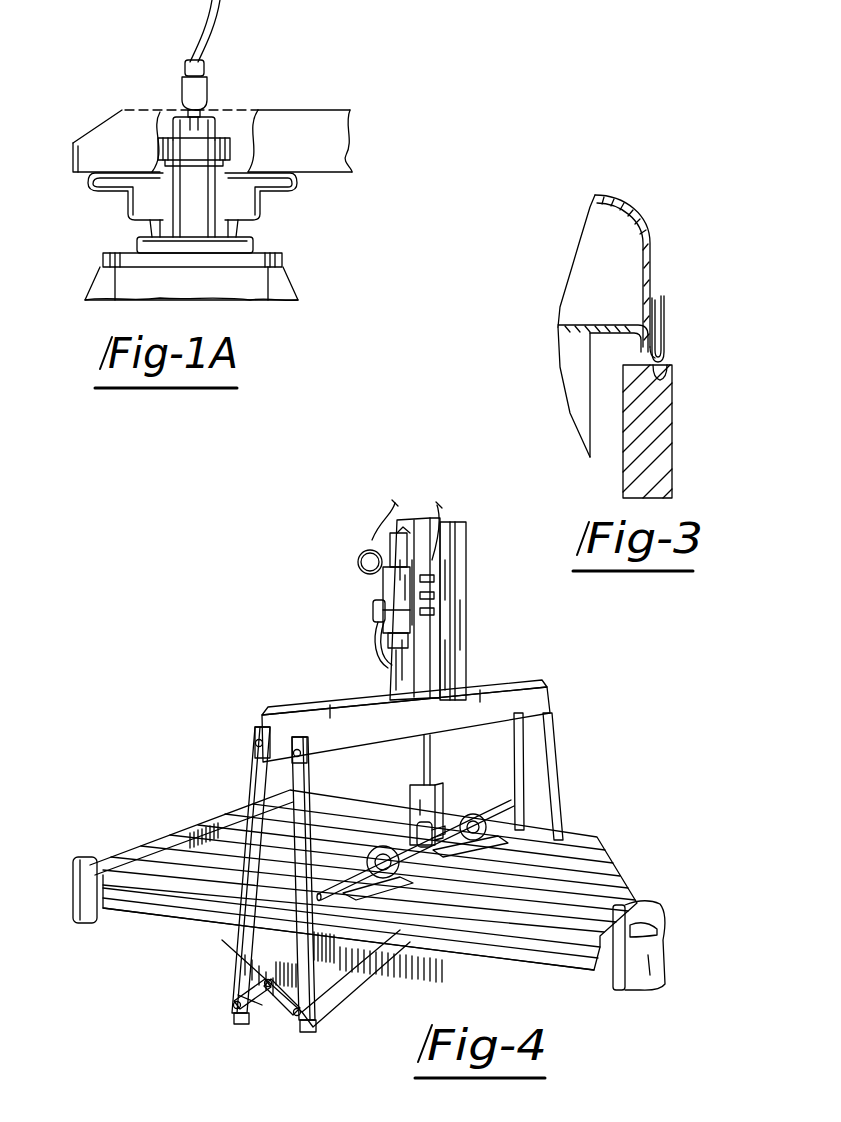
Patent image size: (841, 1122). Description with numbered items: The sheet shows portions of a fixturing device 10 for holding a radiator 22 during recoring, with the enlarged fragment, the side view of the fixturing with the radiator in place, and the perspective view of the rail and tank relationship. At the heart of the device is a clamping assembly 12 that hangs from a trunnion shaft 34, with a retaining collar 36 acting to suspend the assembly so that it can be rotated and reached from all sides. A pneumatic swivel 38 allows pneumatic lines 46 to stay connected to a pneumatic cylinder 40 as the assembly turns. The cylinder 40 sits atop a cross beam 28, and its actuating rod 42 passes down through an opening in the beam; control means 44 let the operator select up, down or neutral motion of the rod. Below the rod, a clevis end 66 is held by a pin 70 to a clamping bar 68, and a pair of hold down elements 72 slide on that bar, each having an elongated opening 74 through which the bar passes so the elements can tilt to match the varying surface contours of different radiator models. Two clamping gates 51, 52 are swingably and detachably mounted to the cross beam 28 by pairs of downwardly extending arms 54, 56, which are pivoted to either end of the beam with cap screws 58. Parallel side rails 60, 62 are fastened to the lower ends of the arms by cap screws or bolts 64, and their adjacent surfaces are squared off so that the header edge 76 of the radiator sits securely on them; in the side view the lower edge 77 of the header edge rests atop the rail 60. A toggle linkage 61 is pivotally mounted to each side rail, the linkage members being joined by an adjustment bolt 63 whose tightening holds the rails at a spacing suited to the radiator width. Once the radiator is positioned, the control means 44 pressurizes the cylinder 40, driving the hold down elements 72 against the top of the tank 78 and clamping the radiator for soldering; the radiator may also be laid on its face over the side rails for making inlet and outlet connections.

In FIG. 4, the fixturing device 10 is at (296, 569).
In FIG. 4, the clamping assembly 12 is at (216, 714).
In FIG. 4, the radiator 22 is at (533, 949).
In FIG. 4, the cross beam 28 is at (328, 719).
In FIG. 1A, the trunnion shaft 34 is at (178, 208).
In FIG. 1A, the retaining collar 36 is at (150, 112).
In FIG. 1A, the pneumatic swivel 38 is at (185, 86).
In FIG. 4, the pneumatic cylinder 40 is at (456, 653).
In FIG. 4, the actuating rod 42 is at (440, 753).
In FIG. 4, the control means 44 is at (365, 601).
In FIG. 1A, the pneumatic lines 46 is at (214, 20).
In FIG. 4, the clamping gate 51 is at (326, 779).
In FIG. 4, the clamping gate 52 is at (246, 774).
In FIG. 4, the arms 54 is at (567, 776).
In FIG. 4, the arms 56 is at (235, 879).
In FIG. 4, the cap screws 58 is at (254, 744).
In FIG. 3, the side rail 60 is at (675, 452).
In FIG. 4, the side rail 60 is at (387, 987).
In FIG. 4, the toggle linkage 61 is at (253, 996).
In FIG. 4, the side rail 62 is at (265, 969).
In FIG. 4, the adjustment bolt 63 is at (268, 1001).
In FIG. 4, the cap screws or bolts 64 is at (240, 1025).
In FIG. 4, the clevis end 66 is at (410, 803).
In FIG. 4, the clamping bar 68 is at (439, 826).
In FIG. 4, the pin 70 is at (598, 841).
In FIG. 4, the hold down elements 72 is at (381, 853).
In FIG. 4, the elongated opening 74 is at (451, 819).
In FIG. 3, the header edge 76 is at (722, 312).
In FIG. 3, the lower edge 77 is at (663, 381).
In FIG. 3, the tank 78 is at (655, 240).